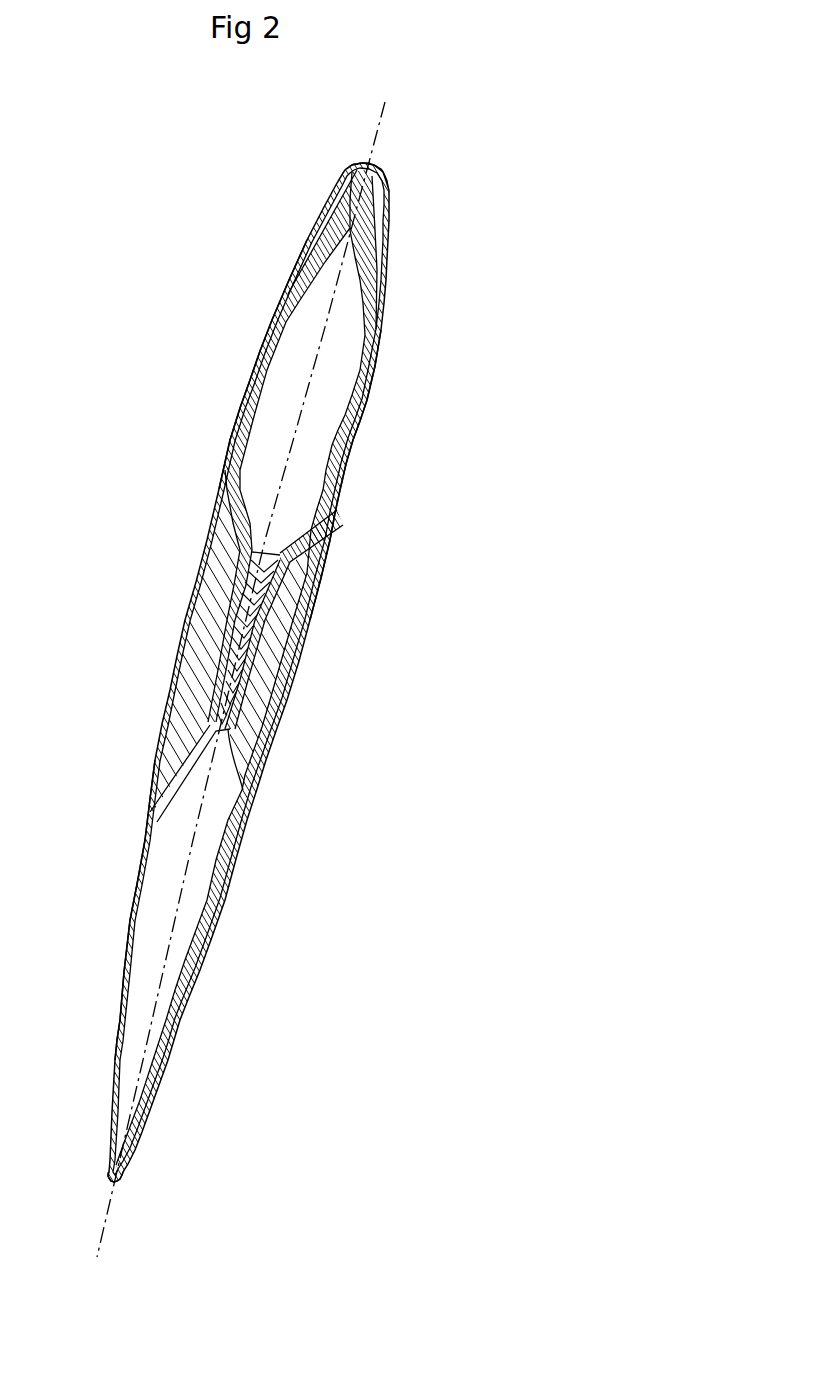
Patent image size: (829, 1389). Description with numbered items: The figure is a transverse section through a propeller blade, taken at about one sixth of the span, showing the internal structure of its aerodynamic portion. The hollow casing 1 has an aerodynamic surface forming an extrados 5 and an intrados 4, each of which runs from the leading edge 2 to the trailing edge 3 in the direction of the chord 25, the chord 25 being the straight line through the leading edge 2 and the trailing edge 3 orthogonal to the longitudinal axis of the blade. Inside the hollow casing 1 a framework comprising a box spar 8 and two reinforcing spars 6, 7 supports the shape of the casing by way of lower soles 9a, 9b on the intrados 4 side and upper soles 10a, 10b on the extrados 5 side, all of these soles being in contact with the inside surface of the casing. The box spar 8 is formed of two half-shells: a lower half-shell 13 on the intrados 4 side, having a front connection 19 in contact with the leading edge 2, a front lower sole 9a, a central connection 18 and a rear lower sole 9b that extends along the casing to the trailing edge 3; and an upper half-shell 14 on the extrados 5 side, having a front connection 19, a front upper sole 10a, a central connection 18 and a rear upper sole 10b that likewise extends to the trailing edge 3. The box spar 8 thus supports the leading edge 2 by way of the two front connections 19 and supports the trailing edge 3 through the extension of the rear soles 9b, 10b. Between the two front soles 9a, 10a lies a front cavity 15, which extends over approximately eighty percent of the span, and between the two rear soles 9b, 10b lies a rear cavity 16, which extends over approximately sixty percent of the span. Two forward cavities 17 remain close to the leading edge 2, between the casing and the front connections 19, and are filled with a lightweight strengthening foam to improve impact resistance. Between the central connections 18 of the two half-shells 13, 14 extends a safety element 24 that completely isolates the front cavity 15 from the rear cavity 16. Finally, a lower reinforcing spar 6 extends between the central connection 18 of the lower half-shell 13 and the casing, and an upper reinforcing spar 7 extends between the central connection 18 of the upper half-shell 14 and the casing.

The hollow casing 1 is at (313, 617).
The leading edge 2 is at (360, 150).
The trailing edge 3 is at (110, 1180).
The intrados 4 is at (368, 408).
The extrados 5 is at (237, 420).
The lower reinforcing spar 6 is at (313, 568).
The upper reinforcing spar 7 is at (202, 577).
The box spar 8 is at (268, 372).
The front lower sole 9a is at (358, 447).
The rear lower sole 9b is at (215, 923).
The front upper sole 10a is at (253, 370).
The rear upper sole 10b is at (130, 925).
The lower half-shell 13 is at (380, 322).
The upper half-shell 14 is at (283, 315).
The front cavity 15 is at (265, 473).
The rear cavity 16 is at (173, 840).
The forward cavities 17 is at (374, 228).
The central connection 18 is at (247, 668).
The front connections 19 is at (370, 203).
The safety element 24 is at (262, 637).
The chord 25 is at (386, 105).